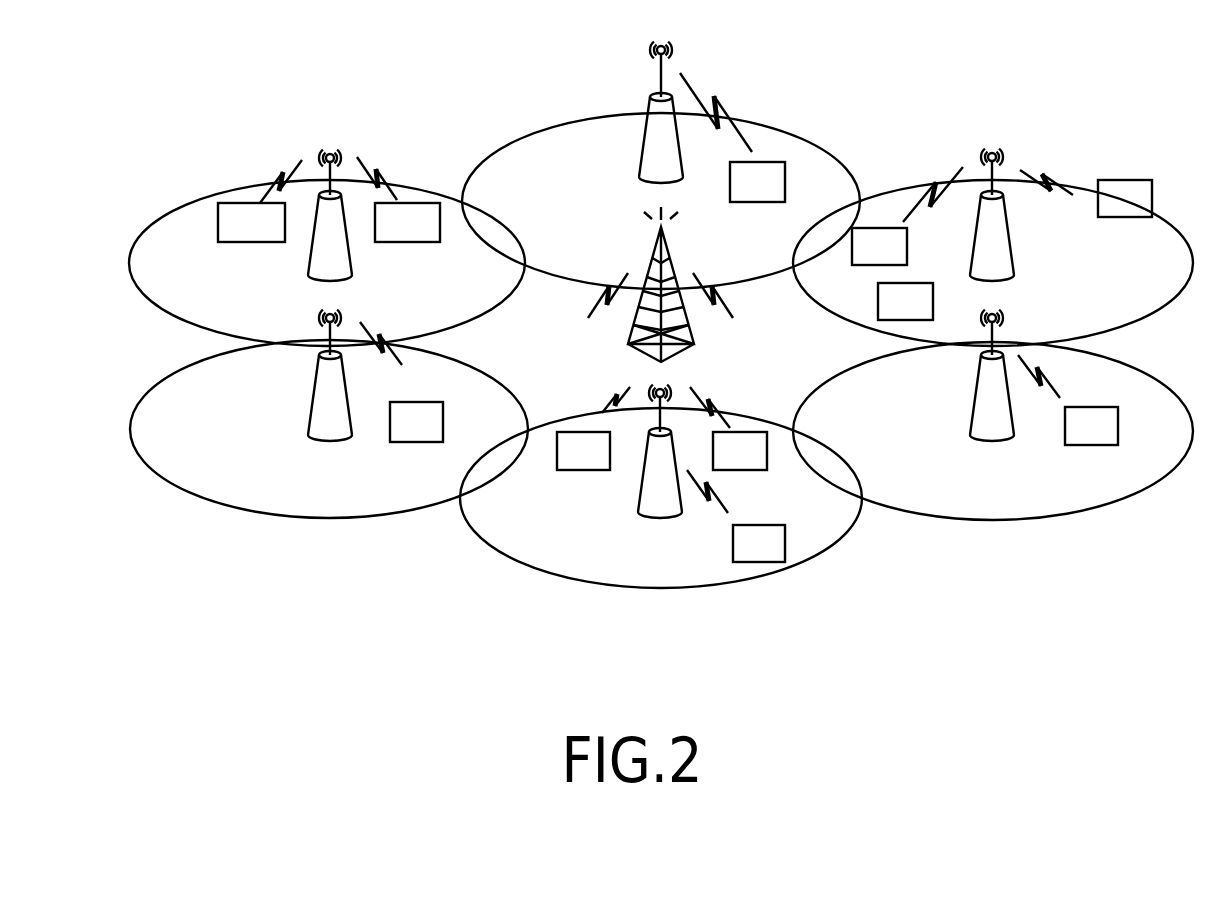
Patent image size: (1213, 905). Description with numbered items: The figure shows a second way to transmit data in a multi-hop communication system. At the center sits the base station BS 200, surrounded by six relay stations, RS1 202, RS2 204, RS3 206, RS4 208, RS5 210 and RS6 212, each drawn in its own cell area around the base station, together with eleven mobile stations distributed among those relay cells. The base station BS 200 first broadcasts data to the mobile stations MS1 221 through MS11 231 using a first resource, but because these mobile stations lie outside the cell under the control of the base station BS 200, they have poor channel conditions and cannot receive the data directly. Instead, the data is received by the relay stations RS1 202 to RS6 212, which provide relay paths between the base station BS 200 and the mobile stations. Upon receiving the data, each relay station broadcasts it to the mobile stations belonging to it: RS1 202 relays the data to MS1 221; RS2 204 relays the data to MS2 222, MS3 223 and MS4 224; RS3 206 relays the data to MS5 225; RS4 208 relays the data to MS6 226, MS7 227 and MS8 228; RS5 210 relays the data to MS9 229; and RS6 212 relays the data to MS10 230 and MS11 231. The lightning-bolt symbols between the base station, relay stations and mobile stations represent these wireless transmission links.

The base station 200 is at (670, 300).
The relay station RS1 202 is at (329, 414).
The relay station RS2 204 is at (661, 486).
The relay station RS3 206 is at (993, 415).
The relay station RS4 208 is at (993, 247).
The relay station RS5 210 is at (661, 165).
The relay station RS6 212 is at (327, 248).
The mobile station MS1 221 is at (415, 442).
The mobile station MS2 222 is at (583, 470).
The mobile station MS3 223 is at (767, 450).
The mobile station MS4 224 is at (757, 562).
The mobile station MS5 225 is at (1088, 445).
The mobile station MS6 226 is at (880, 265).
The mobile station MS7 227 is at (1125, 217).
The mobile station MS8 228 is at (878, 305).
The mobile station MS9 229 is at (760, 202).
The mobile station MS10 230 is at (252, 203).
The mobile station MS11 231 is at (405, 203).